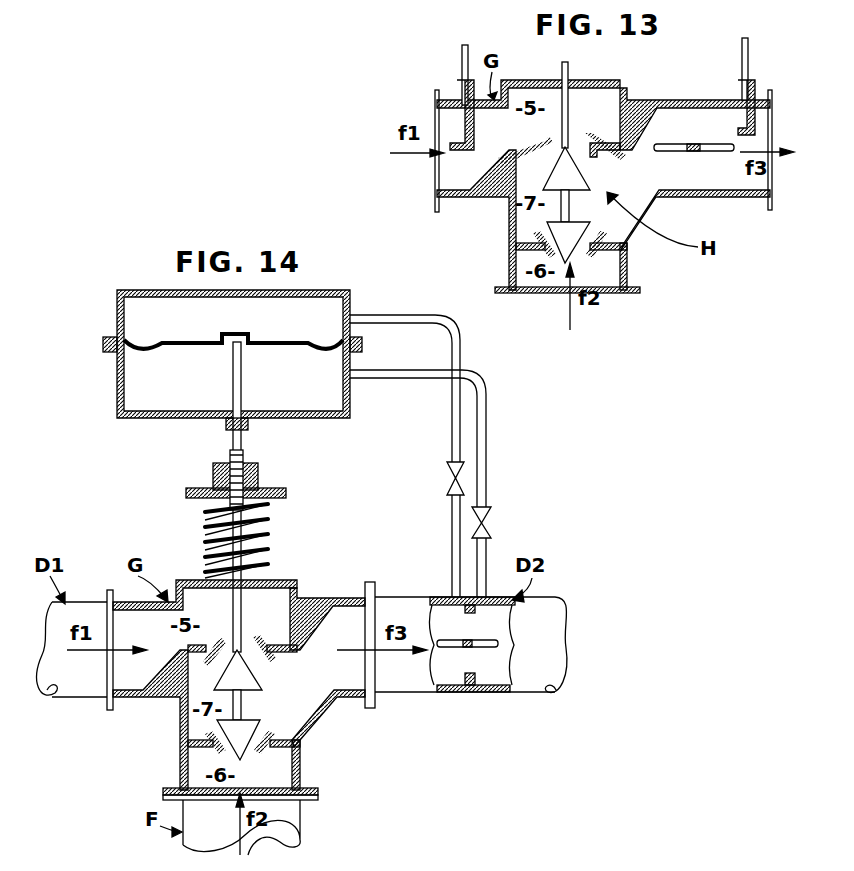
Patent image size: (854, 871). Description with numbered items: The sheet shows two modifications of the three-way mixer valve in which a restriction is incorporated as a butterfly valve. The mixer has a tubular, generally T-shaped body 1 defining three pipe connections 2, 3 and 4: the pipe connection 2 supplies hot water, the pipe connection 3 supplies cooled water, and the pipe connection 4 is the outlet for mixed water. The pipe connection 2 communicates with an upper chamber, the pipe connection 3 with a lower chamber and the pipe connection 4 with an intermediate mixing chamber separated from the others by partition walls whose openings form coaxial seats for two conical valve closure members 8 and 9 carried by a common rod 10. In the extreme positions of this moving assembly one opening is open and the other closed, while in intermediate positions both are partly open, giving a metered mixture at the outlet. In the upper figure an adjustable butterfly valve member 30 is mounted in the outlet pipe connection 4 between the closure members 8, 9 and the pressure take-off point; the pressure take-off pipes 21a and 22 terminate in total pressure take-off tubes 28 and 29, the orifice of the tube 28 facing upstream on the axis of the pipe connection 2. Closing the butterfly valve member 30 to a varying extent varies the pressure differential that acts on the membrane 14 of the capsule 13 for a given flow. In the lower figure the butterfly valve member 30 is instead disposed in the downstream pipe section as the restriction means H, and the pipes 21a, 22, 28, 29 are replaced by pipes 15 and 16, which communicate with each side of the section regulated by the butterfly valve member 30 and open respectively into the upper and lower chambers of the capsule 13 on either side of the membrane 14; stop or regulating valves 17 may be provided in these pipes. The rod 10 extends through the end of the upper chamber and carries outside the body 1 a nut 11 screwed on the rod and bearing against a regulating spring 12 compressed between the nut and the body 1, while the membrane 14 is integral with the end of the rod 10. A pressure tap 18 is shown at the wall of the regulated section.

In FIG. 13, the body 1 is at (518, 84).
In FIG. 14, the body 1 is at (176, 588).
In FIG. 13, the pipe connection 2 is at (456, 202).
In FIG. 14, the pipe connection 2 is at (110, 592).
In FIG. 13, the pipe connection 3 is at (505, 272).
In FIG. 14, the pipe connection 3 is at (182, 782).
In FIG. 13, the pipe connection 4 is at (752, 198).
In FIG. 14, the pipe connection 4 is at (368, 700).
In FIG. 13, the conical valve closure member 8 is at (582, 168).
In FIG. 14, the conical valve closure member 8 is at (266, 672).
In FIG. 13, the conical valve closure member 9 is at (592, 235).
In FIG. 14, the conical valve closure member 9 is at (270, 740).
In FIG. 14, the rod 10 is at (239, 616).
In FIG. 14, the nut 11 is at (213, 472).
In FIG. 14, the regulating spring 12 is at (205, 513).
In FIG. 14, the capsule 13 is at (117, 312).
In FIG. 14, the membrane 14 is at (160, 346).
In FIG. 14, the pipe 15 is at (390, 322).
In FIG. 14, the pipe 16 is at (392, 378).
In FIG. 14, the stop valves or regulating valves 17 is at (472, 522).
In FIG. 14, the rigid diaphragm 18 is at (465, 683).
In FIG. 13, the pressure take-off pipe 21a is at (462, 60).
In FIG. 13, the pressure take-off pipe 22 is at (742, 62).
In FIG. 13, the total pressure take-off tube 28 is at (453, 137).
In FIG. 13, the total pressure take-off tube 29 is at (737, 123).
In FIG. 13, the butterfly valve member 30 is at (712, 152).
In FIG. 14, the butterfly valve member 30 is at (436, 600).
In FIG. 14, the restriction means H is at (478, 685).